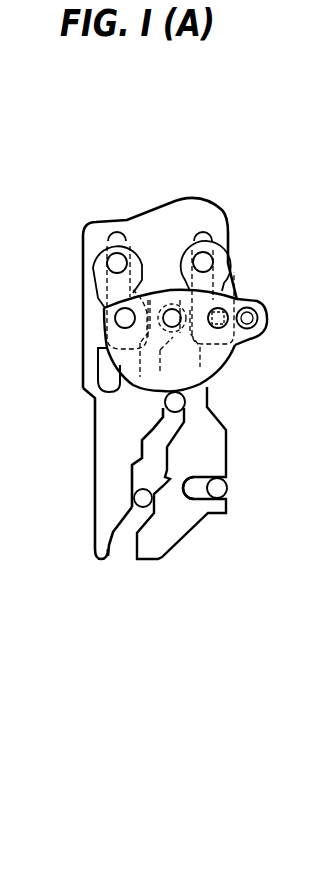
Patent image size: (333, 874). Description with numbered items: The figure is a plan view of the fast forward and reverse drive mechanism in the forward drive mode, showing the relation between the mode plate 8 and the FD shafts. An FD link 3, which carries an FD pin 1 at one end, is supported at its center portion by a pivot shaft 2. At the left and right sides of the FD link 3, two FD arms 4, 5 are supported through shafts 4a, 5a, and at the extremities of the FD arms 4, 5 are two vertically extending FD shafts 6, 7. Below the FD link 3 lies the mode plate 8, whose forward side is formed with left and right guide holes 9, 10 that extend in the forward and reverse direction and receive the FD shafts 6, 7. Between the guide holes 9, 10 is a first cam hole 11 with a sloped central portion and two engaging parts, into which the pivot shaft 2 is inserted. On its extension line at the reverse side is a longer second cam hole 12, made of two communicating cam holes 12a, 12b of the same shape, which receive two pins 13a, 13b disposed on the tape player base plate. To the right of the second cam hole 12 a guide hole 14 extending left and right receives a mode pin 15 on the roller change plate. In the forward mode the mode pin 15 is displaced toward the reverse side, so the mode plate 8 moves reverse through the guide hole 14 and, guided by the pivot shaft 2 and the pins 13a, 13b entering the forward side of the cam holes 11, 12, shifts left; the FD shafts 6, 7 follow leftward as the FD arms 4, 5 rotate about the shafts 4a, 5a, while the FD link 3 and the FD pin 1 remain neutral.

The FD pin 1 is at (259, 317).
The pivot shaft 2 is at (180, 316).
The FD link 3 is at (213, 353).
The FD arm 4 is at (101, 283).
The shaft 4a is at (120, 320).
The FD arm 5 is at (228, 233).
The shaft 5a is at (233, 337).
The FD shaft 6 is at (108, 263).
The FD shaft 7 is at (203, 305).
The mode plate 8 is at (208, 443).
The guide hole 9 is at (117, 236).
The guide hole 10 is at (200, 237).
The first cam hole 11 is at (125, 384).
The second cam hole 12 is at (118, 550).
The cam hole 12a is at (157, 433).
The cam hole 12b is at (128, 531).
The pin 13a is at (176, 401).
The pin 13b is at (136, 500).
The guide hole 14 is at (201, 488).
The mode pin 15 is at (218, 488).